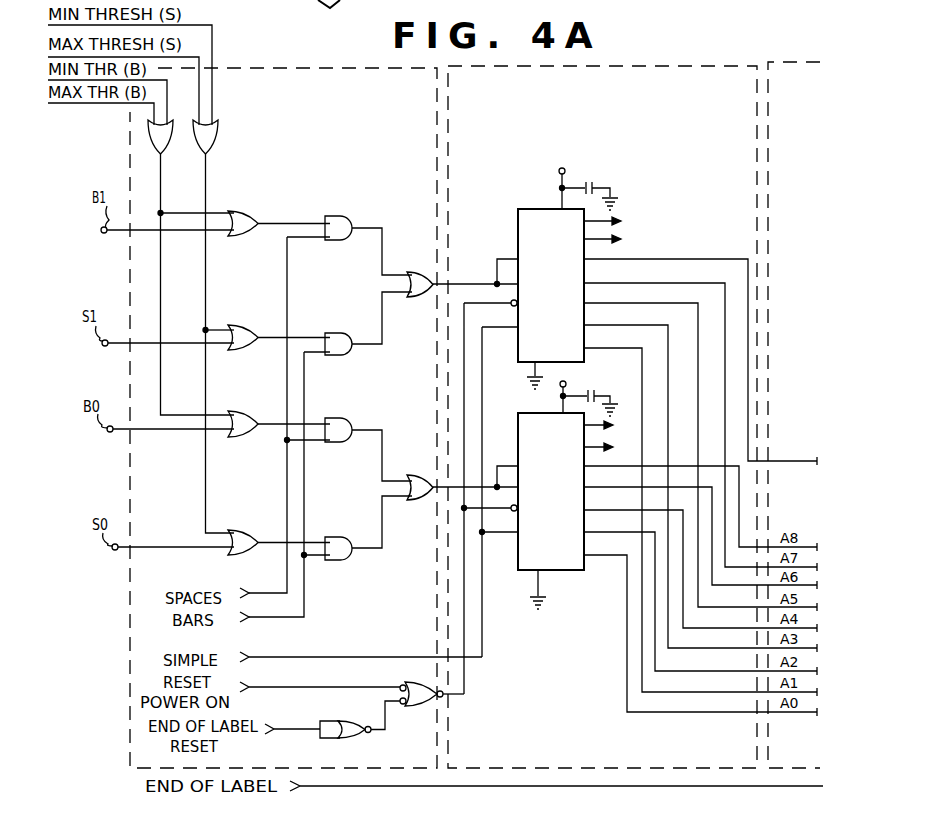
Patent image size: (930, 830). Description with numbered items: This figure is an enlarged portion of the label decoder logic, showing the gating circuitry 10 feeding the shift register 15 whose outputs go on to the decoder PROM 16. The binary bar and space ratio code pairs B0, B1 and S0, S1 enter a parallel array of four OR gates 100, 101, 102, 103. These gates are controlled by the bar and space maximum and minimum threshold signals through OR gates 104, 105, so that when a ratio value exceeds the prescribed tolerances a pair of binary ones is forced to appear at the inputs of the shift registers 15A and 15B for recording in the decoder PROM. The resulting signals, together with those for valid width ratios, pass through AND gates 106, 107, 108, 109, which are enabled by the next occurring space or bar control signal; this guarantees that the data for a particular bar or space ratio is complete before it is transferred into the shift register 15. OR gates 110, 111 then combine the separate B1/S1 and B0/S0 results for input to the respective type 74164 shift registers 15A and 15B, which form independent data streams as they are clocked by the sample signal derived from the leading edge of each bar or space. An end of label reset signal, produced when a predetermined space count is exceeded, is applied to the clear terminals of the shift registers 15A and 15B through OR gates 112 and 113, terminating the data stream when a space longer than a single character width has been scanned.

The gating circuit 10 is at (412, 104).
The shift register 15 is at (487, 107).
The decoder PROM 16 is at (802, 98).
The shift register 15A is at (537, 218).
The shift register 15B is at (527, 430).
The OR gate 100 is at (252, 235).
The OR gate 101 is at (252, 350).
The OR gate 102 is at (241, 437).
The OR gate 103 is at (250, 554).
The OR gate 104 is at (150, 134).
The OR gate 105 is at (217, 130).
The AND gate 106 is at (355, 212).
The AND gate 107 is at (350, 330).
The AND gate 108 is at (355, 405).
The AND gate 109 is at (352, 536).
The OR gate 110 is at (414, 270).
The OR gate 111 is at (421, 478).
The OR gate 112 is at (357, 722).
The OR gate 113 is at (419, 688).